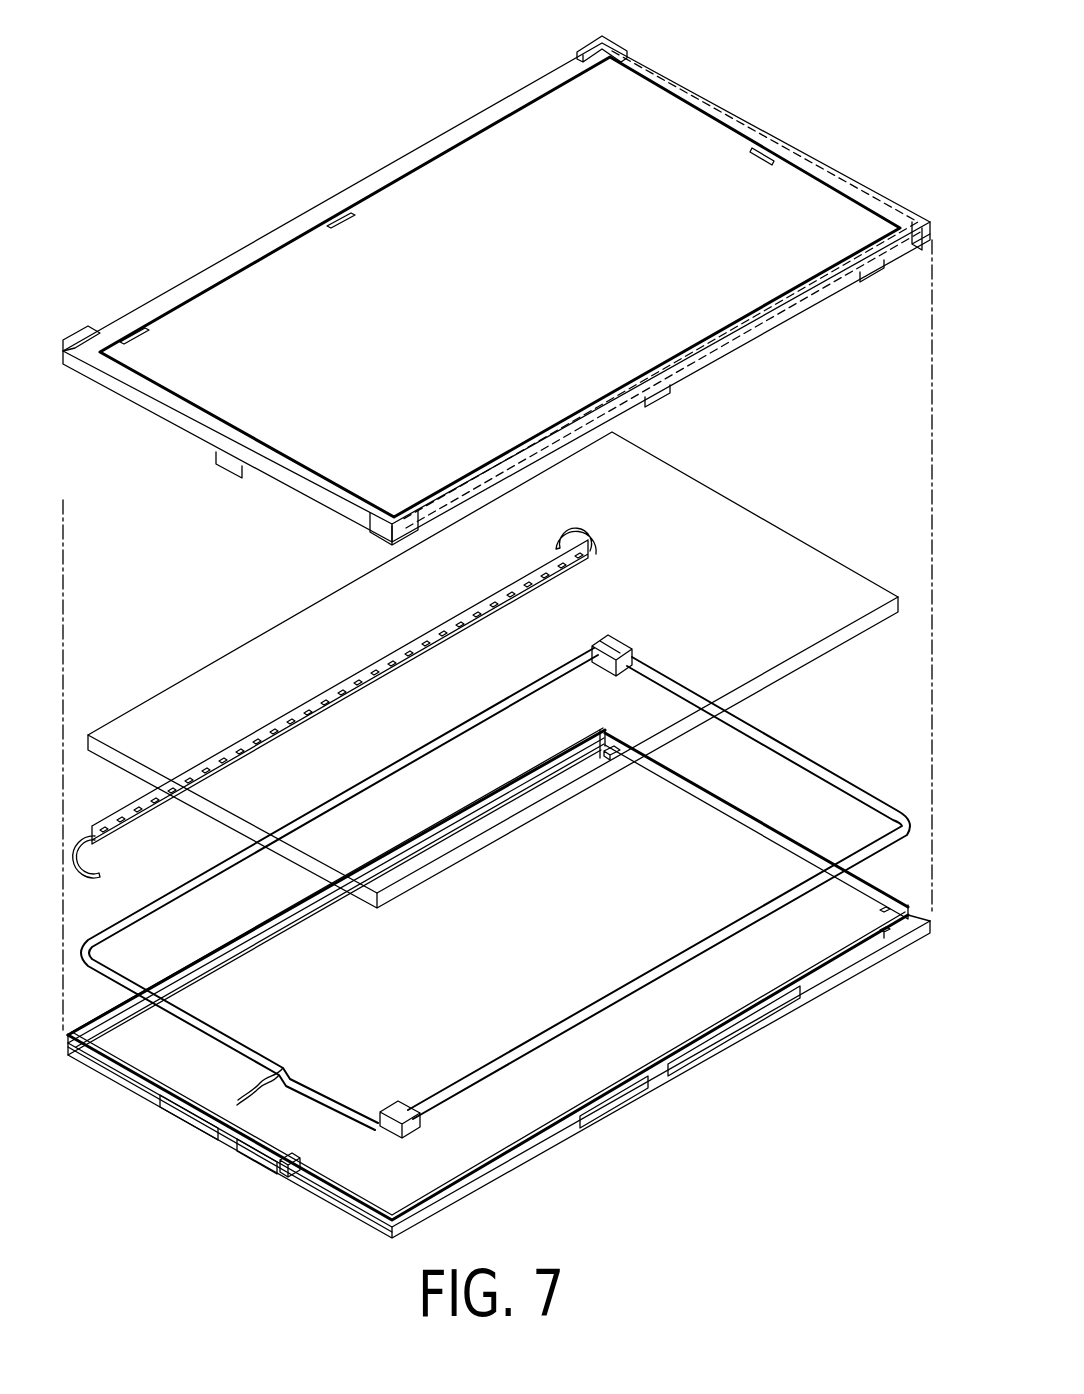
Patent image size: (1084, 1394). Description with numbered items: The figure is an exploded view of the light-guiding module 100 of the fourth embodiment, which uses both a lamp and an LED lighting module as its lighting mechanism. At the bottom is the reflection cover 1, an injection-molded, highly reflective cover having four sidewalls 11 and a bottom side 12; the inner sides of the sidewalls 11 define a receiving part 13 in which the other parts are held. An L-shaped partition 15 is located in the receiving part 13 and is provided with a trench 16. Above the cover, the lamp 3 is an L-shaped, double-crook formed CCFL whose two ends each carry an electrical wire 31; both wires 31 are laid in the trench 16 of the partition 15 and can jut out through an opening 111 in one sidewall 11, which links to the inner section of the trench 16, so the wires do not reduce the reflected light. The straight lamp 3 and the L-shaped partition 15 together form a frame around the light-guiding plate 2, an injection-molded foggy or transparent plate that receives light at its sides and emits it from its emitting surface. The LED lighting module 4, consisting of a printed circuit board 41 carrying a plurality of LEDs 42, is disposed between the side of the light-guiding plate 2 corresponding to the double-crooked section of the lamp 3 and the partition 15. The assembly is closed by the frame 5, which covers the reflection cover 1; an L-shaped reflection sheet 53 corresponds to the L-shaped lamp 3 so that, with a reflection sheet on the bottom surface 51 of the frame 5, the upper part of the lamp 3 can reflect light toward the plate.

The light-guiding module 100 is at (182, 50).
The reflection cover 1 is at (170, 1115).
The sidewall 11 is at (617, 1092).
The bottom side 12 is at (693, 1010).
The receiving part 13 is at (702, 858).
The partition 15 is at (205, 957).
The trench 16 is at (252, 930).
The opening 111 is at (278, 1172).
The light-guiding plate 2 is at (302, 592).
The lamp 3 is at (848, 790).
The electrical wire 31 is at (197, 1030).
The LED lighting module 4 is at (277, 713).
The printed circuit board 41 is at (195, 772).
The LEDs 42 is at (592, 560).
The frame 5 is at (230, 250).
The bottom surface 51 is at (500, 142).
The reflection sheet 53 is at (815, 307).